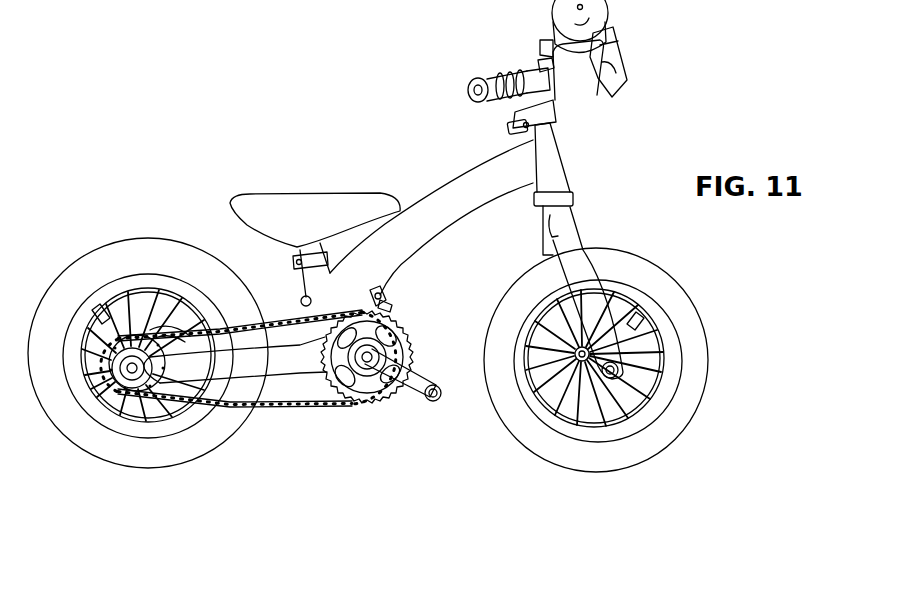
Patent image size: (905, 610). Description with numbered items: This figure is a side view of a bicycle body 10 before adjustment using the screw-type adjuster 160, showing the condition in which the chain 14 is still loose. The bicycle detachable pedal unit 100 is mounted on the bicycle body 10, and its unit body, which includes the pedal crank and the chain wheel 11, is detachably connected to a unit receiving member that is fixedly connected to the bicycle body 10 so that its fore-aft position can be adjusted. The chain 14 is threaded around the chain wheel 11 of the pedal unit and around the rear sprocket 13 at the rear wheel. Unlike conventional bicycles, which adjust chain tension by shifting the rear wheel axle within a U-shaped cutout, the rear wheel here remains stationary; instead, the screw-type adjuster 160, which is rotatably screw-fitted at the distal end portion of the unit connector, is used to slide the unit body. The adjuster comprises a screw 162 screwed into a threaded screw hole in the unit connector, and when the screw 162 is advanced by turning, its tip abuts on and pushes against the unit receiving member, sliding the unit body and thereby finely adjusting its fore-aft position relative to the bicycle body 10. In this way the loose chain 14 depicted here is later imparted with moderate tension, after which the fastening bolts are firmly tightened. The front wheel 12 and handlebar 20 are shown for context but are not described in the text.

The bicycle detachable pedal unit 100 is at (418, 330).
The bicycle body 10 is at (448, 198).
The chain wheel 11 is at (342, 382).
The front wheel 12 is at (596, 360).
The rear sprocket 13 is at (130, 373).
The chain 14 is at (270, 407).
The handlebar 20 is at (547, 67).
The screw-type adjuster 160 is at (377, 293).
The screw 162 is at (387, 306).